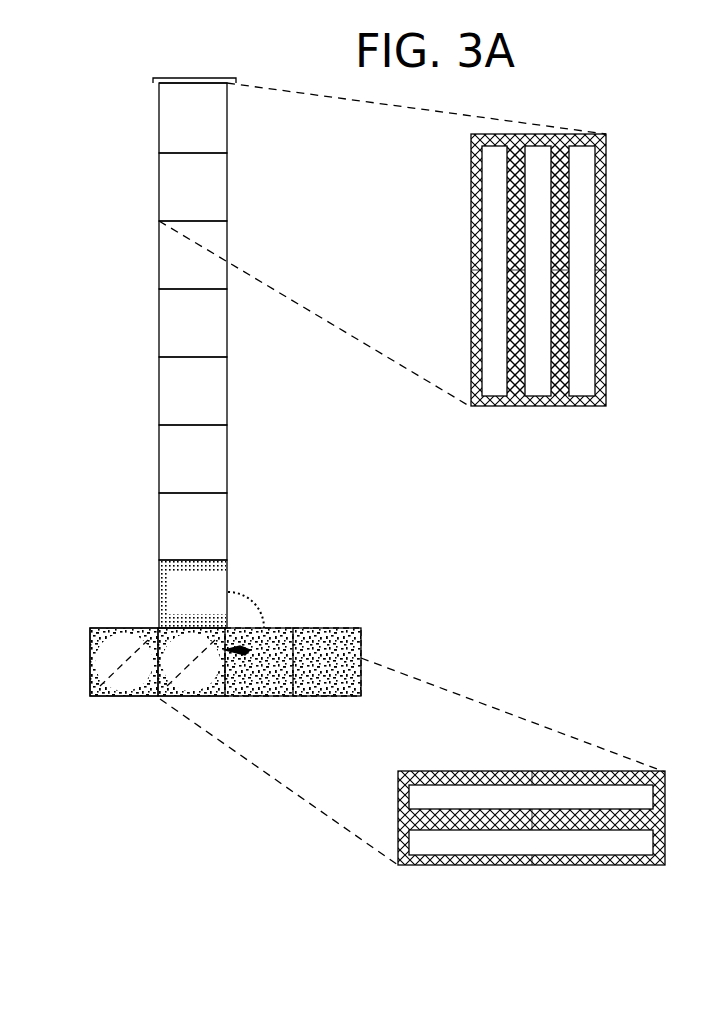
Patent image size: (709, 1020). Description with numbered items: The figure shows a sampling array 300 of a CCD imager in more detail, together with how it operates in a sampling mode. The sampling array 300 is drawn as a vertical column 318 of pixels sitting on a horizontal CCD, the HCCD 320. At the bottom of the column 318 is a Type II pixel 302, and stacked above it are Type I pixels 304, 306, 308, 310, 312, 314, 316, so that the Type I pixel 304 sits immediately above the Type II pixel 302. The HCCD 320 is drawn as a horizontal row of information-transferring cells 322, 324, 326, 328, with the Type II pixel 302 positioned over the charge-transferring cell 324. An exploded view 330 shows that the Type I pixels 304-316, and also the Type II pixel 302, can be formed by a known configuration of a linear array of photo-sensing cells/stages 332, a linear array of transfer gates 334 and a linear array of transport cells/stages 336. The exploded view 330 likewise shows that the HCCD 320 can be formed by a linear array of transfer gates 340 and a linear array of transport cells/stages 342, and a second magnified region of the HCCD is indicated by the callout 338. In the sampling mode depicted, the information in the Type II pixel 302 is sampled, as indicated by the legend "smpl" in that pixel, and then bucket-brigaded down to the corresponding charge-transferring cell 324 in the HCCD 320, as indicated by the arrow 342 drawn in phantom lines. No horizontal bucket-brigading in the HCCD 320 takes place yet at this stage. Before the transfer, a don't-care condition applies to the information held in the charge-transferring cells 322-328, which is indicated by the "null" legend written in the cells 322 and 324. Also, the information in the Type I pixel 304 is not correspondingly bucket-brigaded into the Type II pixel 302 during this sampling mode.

The sampling array 300 is at (96, 556).
The Type II pixel 302 is at (228, 570).
The Type I pixel 304 is at (210, 527).
The Type I pixel 306 is at (168, 458).
The Type I pixel 308 is at (168, 390).
The Type I pixel 310 is at (168, 322).
The Type I pixel 312 is at (168, 258).
The Type I pixel 314 is at (168, 194).
The Type I pixel 316 is at (168, 128).
The column 318 is at (195, 75).
The HCCD 320 is at (80, 630).
The information-transferring cell 322 is at (92, 697).
The information-transferring cell 324 is at (222, 697).
The information-transferring cell 326 is at (277, 699).
The information-transferring cell 328 is at (361, 638).
The exploded view 330 is at (312, 316).
The linear array of photo-sensing cells/stages 332 is at (583, 383).
The linear array of transfer gates 334 is at (538, 227).
The linear array of transport cells/stages 336 is at (494, 150).
The magnified view indicator 338 is at (483, 700).
The linear array of transfer gates 340 is at (435, 800).
The linear array of transport cells/stages 342 is at (268, 610).